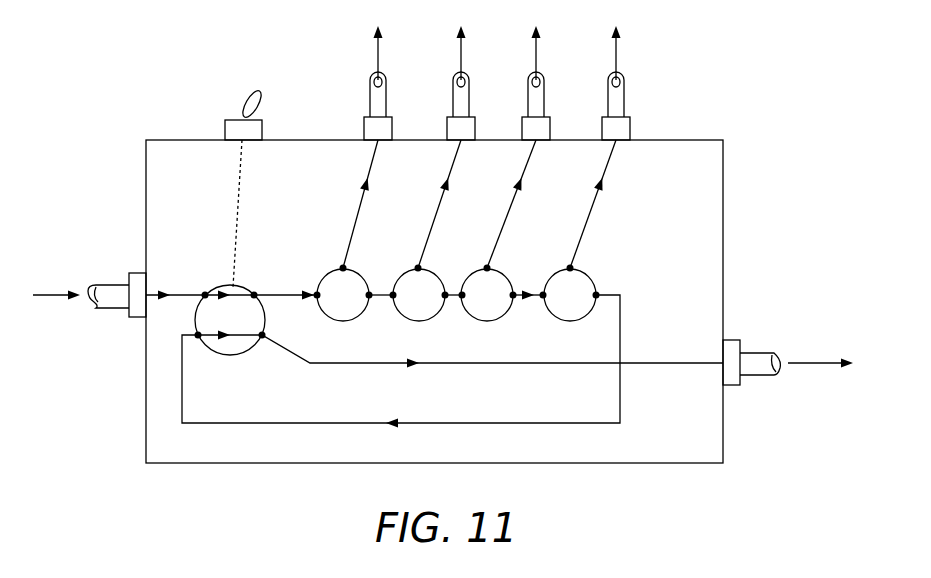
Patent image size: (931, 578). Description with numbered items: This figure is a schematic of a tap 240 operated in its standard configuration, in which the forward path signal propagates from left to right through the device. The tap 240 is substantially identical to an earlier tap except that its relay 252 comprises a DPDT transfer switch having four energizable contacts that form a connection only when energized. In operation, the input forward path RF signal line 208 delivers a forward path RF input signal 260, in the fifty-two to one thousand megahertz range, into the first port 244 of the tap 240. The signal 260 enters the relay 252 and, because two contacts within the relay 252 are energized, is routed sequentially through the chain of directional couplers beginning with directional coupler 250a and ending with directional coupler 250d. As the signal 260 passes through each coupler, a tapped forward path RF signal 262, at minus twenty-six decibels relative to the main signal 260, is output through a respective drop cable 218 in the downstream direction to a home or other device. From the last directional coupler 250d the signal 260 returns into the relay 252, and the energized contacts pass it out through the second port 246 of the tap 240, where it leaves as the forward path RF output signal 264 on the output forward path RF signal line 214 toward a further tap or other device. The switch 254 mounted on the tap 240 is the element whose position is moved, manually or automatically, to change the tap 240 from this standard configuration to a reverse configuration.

The tap 240 is at (738, 62).
The first port 244 is at (140, 273).
The input forward path RF signal line 208 is at (107, 285).
The forward path RF input signal 260 is at (57, 292).
The relay 252 is at (218, 292).
The switch 254 is at (222, 128).
The directional coupler 250a is at (325, 280).
The directional coupler 250d is at (592, 285).
The drop cable 218 is at (370, 96).
The tapped forward path RF signal 262 is at (376, 48).
The second port 246 is at (733, 340).
The output forward path RF signal line 214 is at (762, 378).
The forward path RF output signal 264 is at (818, 363).